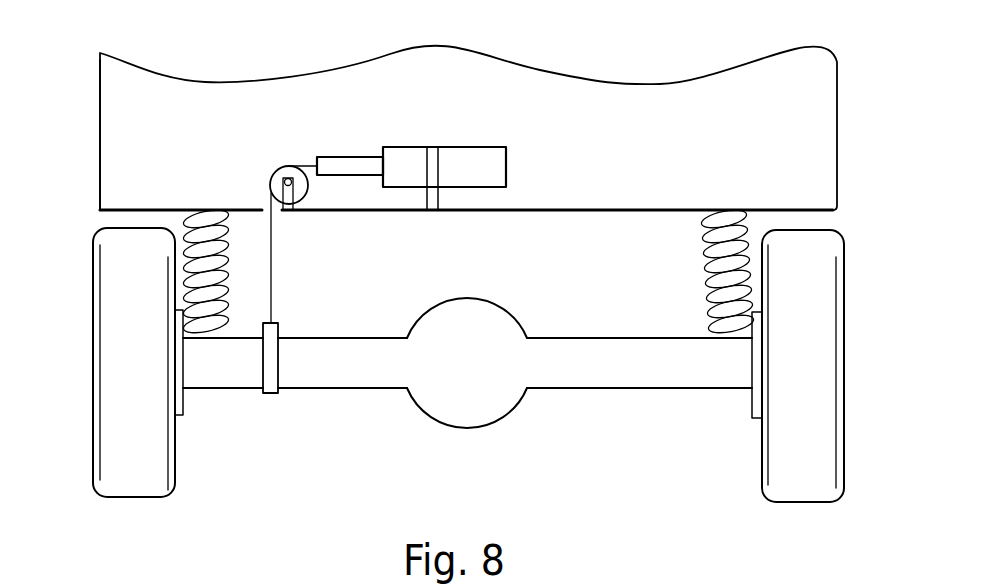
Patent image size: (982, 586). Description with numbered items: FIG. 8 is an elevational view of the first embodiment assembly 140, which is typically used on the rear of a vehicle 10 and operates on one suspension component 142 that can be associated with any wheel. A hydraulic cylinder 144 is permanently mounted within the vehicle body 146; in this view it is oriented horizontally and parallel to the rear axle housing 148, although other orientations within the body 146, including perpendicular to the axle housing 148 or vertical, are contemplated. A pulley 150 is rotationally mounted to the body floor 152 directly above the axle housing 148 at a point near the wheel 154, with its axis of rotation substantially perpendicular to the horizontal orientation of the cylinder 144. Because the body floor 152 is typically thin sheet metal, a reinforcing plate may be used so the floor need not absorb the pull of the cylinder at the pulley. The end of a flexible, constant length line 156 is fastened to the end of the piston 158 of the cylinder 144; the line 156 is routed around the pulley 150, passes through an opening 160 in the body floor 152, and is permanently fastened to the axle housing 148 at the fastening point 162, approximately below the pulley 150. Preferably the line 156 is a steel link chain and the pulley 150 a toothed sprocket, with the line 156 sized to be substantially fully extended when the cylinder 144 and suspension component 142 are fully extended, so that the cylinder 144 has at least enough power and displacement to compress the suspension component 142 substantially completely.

The vehicle 10 is at (287, 62).
The first embodiment assembly 140 is at (300, 153).
The suspension component 142 is at (183, 223).
The hydraulic cylinder 144 is at (485, 141).
The vehicle body 146 is at (100, 122).
The rear axle housing 148 is at (370, 390).
The pulley 150 is at (308, 187).
The body floor 152 is at (528, 212).
The wheel 154 is at (177, 445).
The flexible, constant length line 156 is at (272, 285).
The piston 158 is at (365, 157).
The opening 160 is at (273, 208).
The fastening point 162 is at (278, 328).